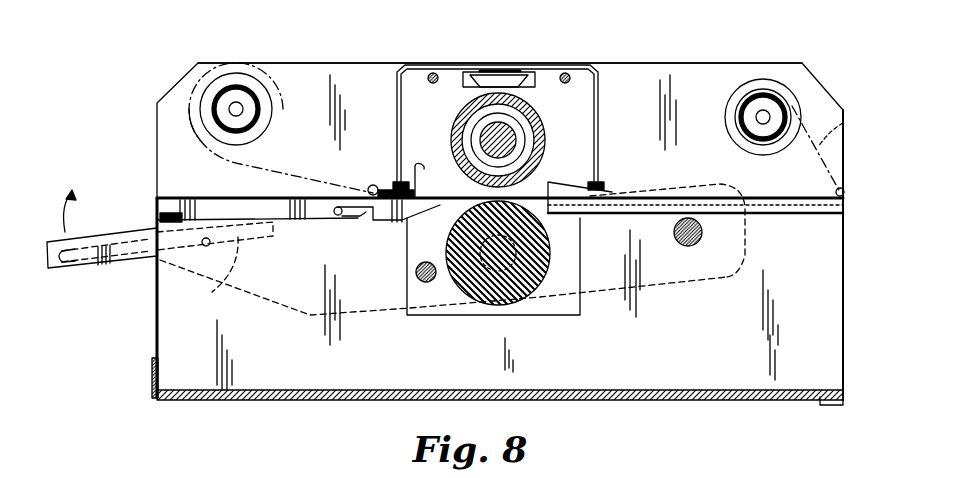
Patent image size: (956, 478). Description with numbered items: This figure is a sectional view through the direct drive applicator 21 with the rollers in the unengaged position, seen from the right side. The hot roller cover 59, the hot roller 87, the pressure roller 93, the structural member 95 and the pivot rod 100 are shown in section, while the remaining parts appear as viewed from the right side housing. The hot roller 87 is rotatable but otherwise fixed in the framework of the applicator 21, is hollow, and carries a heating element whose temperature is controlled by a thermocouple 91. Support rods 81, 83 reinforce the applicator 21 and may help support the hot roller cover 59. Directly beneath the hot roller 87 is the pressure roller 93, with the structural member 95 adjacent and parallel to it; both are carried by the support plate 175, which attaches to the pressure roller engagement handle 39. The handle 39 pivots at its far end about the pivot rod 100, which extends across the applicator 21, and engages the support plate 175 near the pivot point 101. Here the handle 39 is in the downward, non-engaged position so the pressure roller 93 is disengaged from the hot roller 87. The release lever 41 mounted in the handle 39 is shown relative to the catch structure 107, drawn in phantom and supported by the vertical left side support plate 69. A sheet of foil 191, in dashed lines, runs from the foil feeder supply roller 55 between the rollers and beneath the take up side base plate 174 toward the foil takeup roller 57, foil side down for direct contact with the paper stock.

The applicator 21 is at (637, 408).
The pressure roller engagement handle 39 is at (98, 270).
The release lever 41 is at (158, 218).
The foil feeder supply roller 55 is at (247, 88).
The foil takeup roller 57 is at (763, 94).
The hot roller cover 59 is at (513, 70).
The vertical left side support plate 69 is at (692, 73).
The support rod 81 is at (564, 73).
The support rod 83 is at (432, 73).
The hot roller 87 is at (466, 107).
The thermocouple 91 is at (490, 78).
The pressure roller 93 is at (542, 275).
The structural member 95 is at (421, 283).
The pivot rod 100 is at (694, 246).
The pivot point 101 is at (476, 306).
The catch structure 107 is at (443, 276).
The take up side base plate 174 is at (600, 190).
The support plate 175 is at (407, 262).
The foil 191 is at (843, 123).